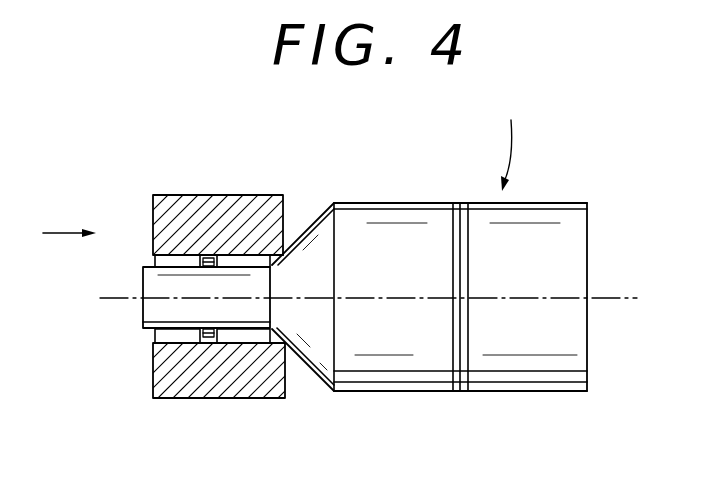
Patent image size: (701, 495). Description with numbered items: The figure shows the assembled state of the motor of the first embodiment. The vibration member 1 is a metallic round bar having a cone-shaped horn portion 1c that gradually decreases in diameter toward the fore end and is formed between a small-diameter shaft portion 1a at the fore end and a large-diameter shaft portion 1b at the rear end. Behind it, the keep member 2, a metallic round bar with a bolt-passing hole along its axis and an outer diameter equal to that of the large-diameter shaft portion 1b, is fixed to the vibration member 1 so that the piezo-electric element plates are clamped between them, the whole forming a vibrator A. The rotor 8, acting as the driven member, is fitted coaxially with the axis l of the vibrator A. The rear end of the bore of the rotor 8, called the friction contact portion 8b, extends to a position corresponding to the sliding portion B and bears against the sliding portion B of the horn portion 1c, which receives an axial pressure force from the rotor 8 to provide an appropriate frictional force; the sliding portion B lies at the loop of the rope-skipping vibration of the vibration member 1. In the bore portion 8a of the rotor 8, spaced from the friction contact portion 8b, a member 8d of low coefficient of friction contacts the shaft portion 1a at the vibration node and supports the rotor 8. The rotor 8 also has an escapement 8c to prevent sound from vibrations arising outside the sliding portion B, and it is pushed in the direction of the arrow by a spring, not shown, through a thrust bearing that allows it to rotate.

The vibration member 1 is at (360, 204).
The small-diameter shaft portion 1a is at (145, 316).
The large-diameter shaft portion 1b is at (427, 205).
The horn portion 1c is at (300, 358).
The keep member 2 is at (561, 205).
The rotor 8 is at (172, 200).
The bore portion 8a is at (208, 262).
The friction contact portion 8b is at (297, 262).
The escapement 8c is at (178, 340).
The member of low coefficient of friction 8d is at (214, 260).
The vibrator A is at (510, 142).
The sliding portion B is at (275, 345).
The axis l is at (375, 299).